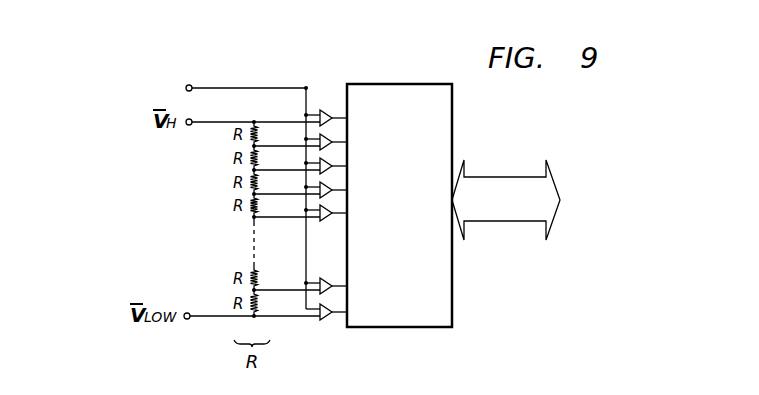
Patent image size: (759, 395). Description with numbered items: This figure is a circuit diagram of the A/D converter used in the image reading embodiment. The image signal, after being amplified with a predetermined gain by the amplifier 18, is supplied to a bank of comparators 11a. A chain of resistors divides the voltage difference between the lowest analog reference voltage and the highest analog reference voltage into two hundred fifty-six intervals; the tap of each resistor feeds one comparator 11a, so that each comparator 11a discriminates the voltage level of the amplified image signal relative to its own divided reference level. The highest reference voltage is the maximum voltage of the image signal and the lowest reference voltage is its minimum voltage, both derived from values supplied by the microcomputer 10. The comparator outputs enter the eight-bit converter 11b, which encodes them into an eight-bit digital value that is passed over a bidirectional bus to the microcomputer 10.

The amplifier 18 is at (186, 88).
The comparator 11a is at (294, 340).
The 8-bit converter 11b is at (452, 97).
The microcomputer 10 is at (587, 200).